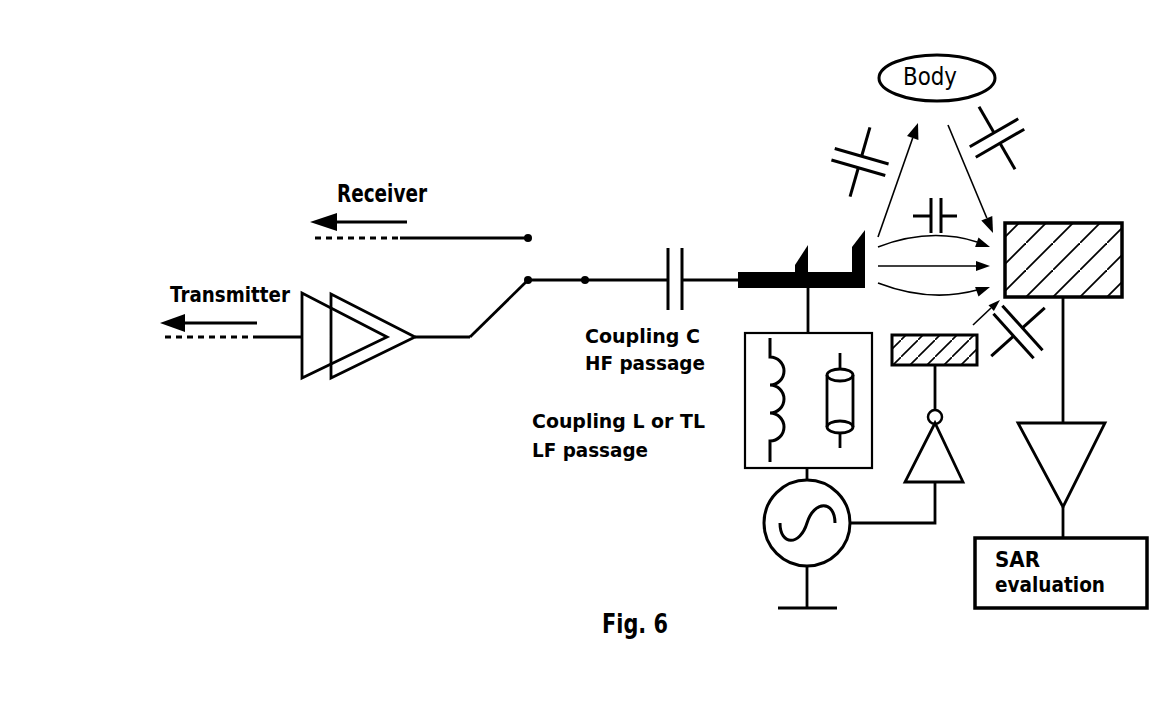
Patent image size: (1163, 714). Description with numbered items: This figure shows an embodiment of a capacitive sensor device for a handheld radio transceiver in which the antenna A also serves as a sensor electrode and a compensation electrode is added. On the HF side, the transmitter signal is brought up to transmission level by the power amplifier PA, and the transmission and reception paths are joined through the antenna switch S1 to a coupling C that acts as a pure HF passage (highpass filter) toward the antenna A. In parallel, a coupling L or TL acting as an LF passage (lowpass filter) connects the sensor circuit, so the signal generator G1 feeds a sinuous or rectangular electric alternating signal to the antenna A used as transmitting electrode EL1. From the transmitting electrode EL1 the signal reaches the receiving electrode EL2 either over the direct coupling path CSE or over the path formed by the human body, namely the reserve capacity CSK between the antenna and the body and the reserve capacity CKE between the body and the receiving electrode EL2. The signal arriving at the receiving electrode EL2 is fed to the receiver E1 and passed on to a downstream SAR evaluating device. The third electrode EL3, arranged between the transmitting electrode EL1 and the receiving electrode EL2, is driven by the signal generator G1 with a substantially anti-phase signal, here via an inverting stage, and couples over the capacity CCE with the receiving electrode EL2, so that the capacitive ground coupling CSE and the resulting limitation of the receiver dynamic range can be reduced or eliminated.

The power amplifier PA is at (358, 327).
The antenna switch S1 is at (569, 285).
The antenna A is at (801, 252).
The transmitting electrode EL1 is at (801, 252).
The receiving electrode EL2 is at (1063, 245).
The third electrode EL3 is at (932, 408).
The receiver E1 is at (1051, 465).
The signal generator G1 is at (785, 538).
The reserve capacity CSK is at (870, 178).
The reserve capacity CKE is at (993, 163).
The direct coupling path CSE is at (934, 247).
The coupling capacity CCE is at (1018, 335).